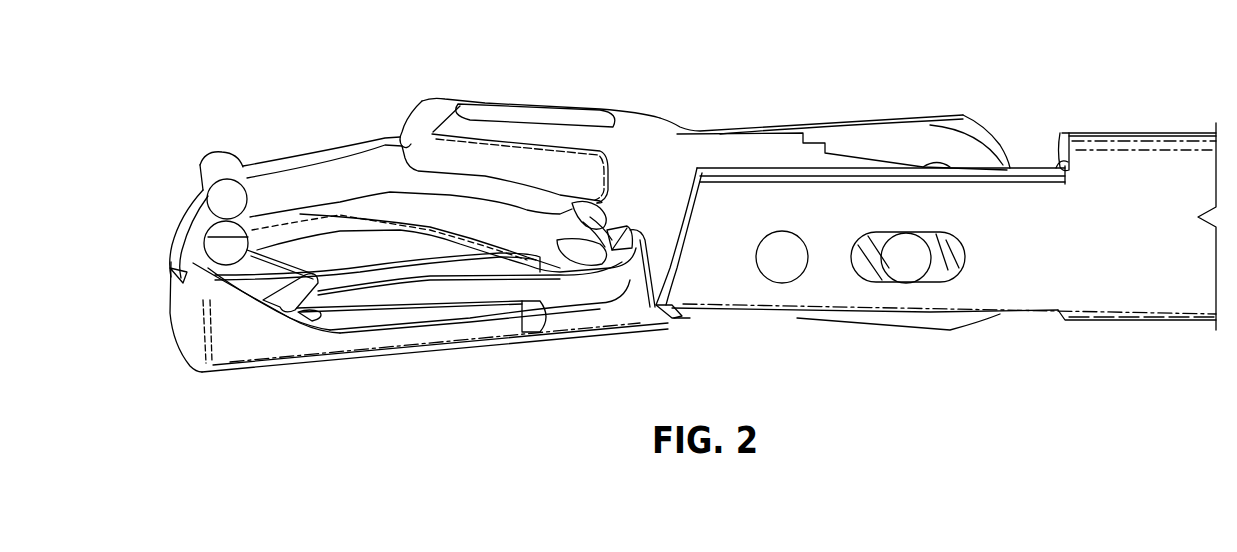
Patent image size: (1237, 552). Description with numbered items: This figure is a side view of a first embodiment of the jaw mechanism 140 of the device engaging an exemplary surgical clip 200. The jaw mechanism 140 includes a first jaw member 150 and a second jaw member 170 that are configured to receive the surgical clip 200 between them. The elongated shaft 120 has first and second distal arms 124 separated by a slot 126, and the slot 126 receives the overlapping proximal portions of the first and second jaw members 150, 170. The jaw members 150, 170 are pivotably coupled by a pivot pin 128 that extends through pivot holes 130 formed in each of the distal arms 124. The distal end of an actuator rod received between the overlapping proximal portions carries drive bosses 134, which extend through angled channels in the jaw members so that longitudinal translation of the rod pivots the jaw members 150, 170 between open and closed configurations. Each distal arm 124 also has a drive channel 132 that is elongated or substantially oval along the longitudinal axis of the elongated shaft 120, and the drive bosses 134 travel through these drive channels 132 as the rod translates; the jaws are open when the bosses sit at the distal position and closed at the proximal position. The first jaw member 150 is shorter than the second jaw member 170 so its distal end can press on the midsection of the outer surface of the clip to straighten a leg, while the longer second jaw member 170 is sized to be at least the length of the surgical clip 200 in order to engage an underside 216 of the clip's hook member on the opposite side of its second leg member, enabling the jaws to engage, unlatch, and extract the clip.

The surgical clip 200 is at (270, 88).
The elongated shaft 120 is at (1143, 170).
The distal arms 124 is at (998, 133).
The slot 126 is at (1040, 156).
The jaw mechanism 140 is at (717, 95).
The pivot pin 128 is at (793, 263).
The pivot holes 130 is at (757, 279).
The drive channel 132 is at (933, 281).
The drive bosses 134 is at (908, 270).
The first jaw member 150 is at (435, 113).
The second jaw member 170 is at (428, 330).
The underside of hook member 216 is at (172, 262).